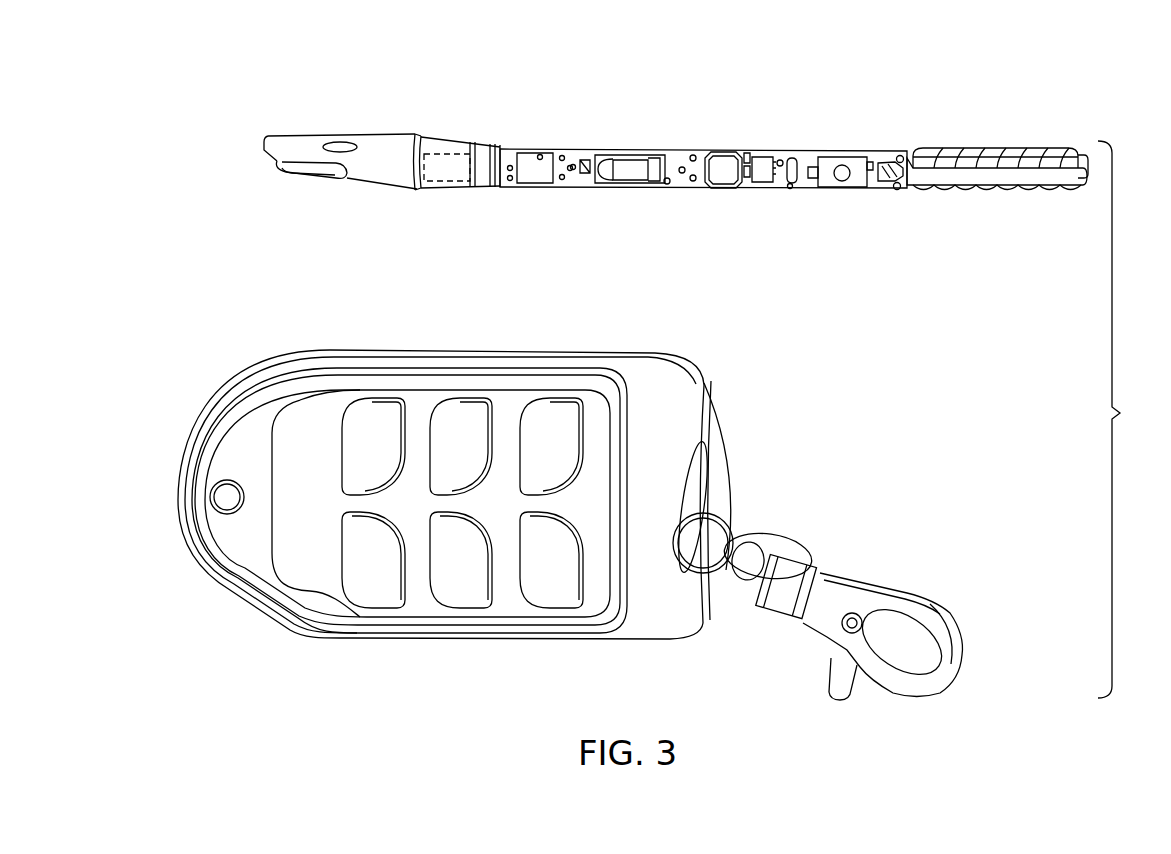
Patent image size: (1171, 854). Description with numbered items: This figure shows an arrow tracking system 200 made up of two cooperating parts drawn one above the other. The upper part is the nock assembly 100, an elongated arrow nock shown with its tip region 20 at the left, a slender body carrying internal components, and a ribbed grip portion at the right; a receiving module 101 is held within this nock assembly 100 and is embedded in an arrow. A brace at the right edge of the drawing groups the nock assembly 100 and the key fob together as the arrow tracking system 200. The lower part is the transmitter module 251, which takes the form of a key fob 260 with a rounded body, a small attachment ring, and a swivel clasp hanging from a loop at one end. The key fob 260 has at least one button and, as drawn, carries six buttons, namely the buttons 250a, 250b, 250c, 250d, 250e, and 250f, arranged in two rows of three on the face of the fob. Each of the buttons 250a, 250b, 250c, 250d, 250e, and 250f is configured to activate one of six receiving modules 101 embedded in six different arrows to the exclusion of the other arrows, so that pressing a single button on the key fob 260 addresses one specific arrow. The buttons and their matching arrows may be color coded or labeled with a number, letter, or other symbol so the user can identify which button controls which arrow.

The nozzle tip 20 is at (402, 116).
The nock assembly 100 is at (304, 225).
The receiving module 101 is at (703, 190).
The arrow tracking system 200 is at (1128, 418).
The transmitter module 251 is at (735, 320).
The key fob 260 is at (695, 406).
The button 250a is at (366, 428).
The button 250b is at (466, 428).
The button 250c is at (566, 428).
The button 250d is at (366, 568).
The button 250e is at (466, 568).
The button 250f is at (566, 568).